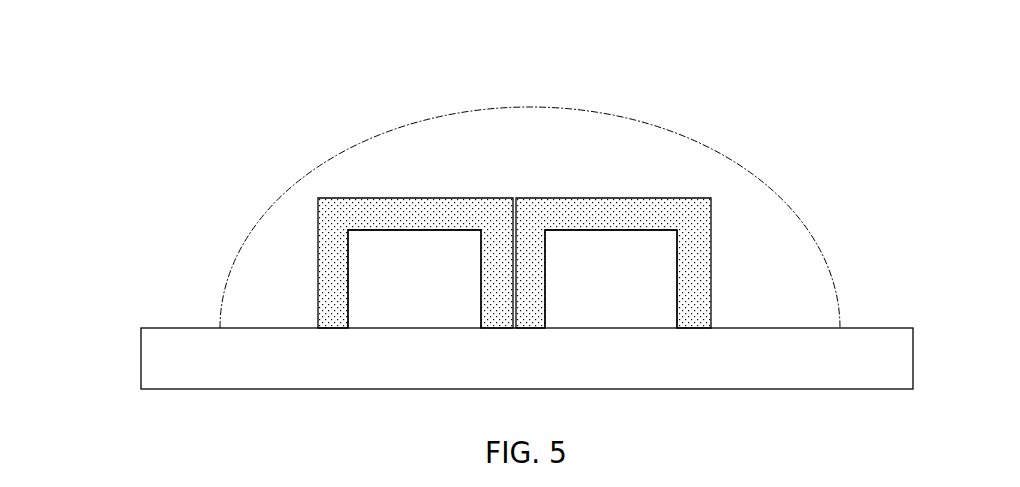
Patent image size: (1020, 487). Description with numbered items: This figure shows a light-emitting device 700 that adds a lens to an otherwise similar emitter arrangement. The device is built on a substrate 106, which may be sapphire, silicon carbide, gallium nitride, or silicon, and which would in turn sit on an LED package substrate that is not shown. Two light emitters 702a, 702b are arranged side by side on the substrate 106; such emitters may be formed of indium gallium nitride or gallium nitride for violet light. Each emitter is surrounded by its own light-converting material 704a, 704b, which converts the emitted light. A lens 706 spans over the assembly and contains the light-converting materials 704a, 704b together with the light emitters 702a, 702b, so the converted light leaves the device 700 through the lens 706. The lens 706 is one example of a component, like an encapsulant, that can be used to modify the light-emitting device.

The light-emitting device 700 is at (124, 37).
The substrate 106 is at (208, 366).
The lens 706 is at (447, 153).
The light-converting material 704a is at (480, 217).
The light-converting material 704b is at (682, 217).
The light emitter 702a is at (442, 286).
The light emitter 702b is at (640, 291).